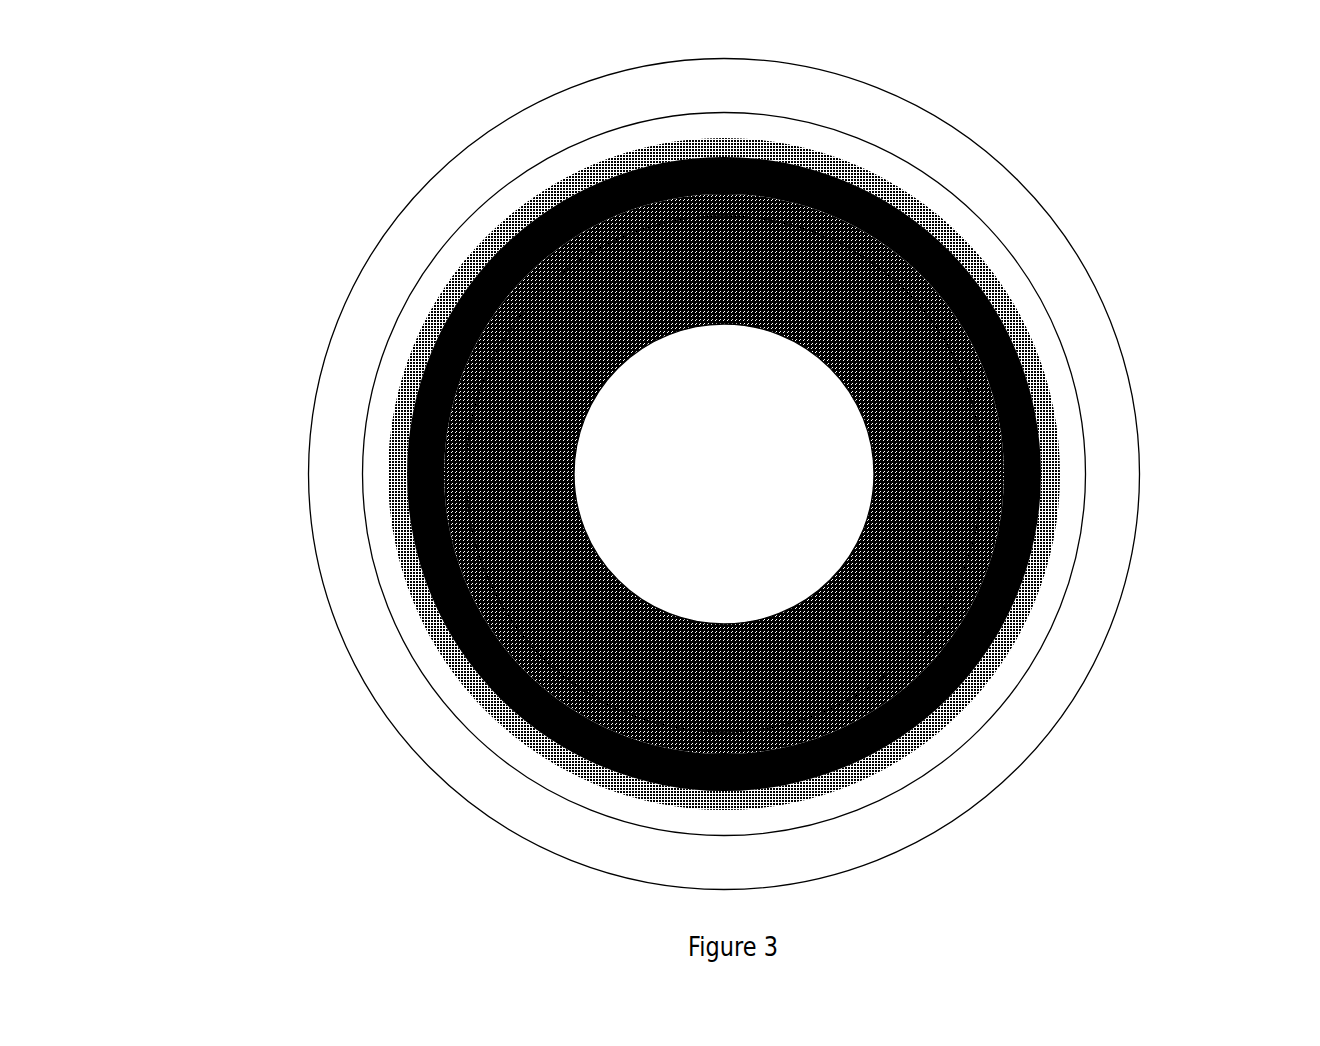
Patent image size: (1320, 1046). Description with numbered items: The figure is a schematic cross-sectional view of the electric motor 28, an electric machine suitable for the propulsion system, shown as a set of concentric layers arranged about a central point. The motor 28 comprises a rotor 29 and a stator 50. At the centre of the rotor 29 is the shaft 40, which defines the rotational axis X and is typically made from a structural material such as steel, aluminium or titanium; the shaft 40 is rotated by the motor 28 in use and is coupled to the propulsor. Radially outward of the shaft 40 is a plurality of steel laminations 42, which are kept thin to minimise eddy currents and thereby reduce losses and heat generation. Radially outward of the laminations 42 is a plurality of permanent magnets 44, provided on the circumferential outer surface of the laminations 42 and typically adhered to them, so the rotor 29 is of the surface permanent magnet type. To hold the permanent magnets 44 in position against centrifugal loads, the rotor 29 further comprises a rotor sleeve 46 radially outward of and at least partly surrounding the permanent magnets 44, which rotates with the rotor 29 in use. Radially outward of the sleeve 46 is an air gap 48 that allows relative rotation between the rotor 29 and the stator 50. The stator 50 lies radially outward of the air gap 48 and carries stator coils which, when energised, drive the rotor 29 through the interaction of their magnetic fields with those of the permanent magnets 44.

The electric motor 28 is at (215, 262).
The rotor 29 is at (590, 292).
The shaft 40 is at (477, 443).
The steel laminations 42 is at (477, 595).
The permanent magnets 44 is at (977, 623).
The rotor sleeve 46 is at (1042, 502).
The air gap 48 is at (1052, 378).
The stator 50 is at (922, 108).
The rotational axis X is at (716, 468).